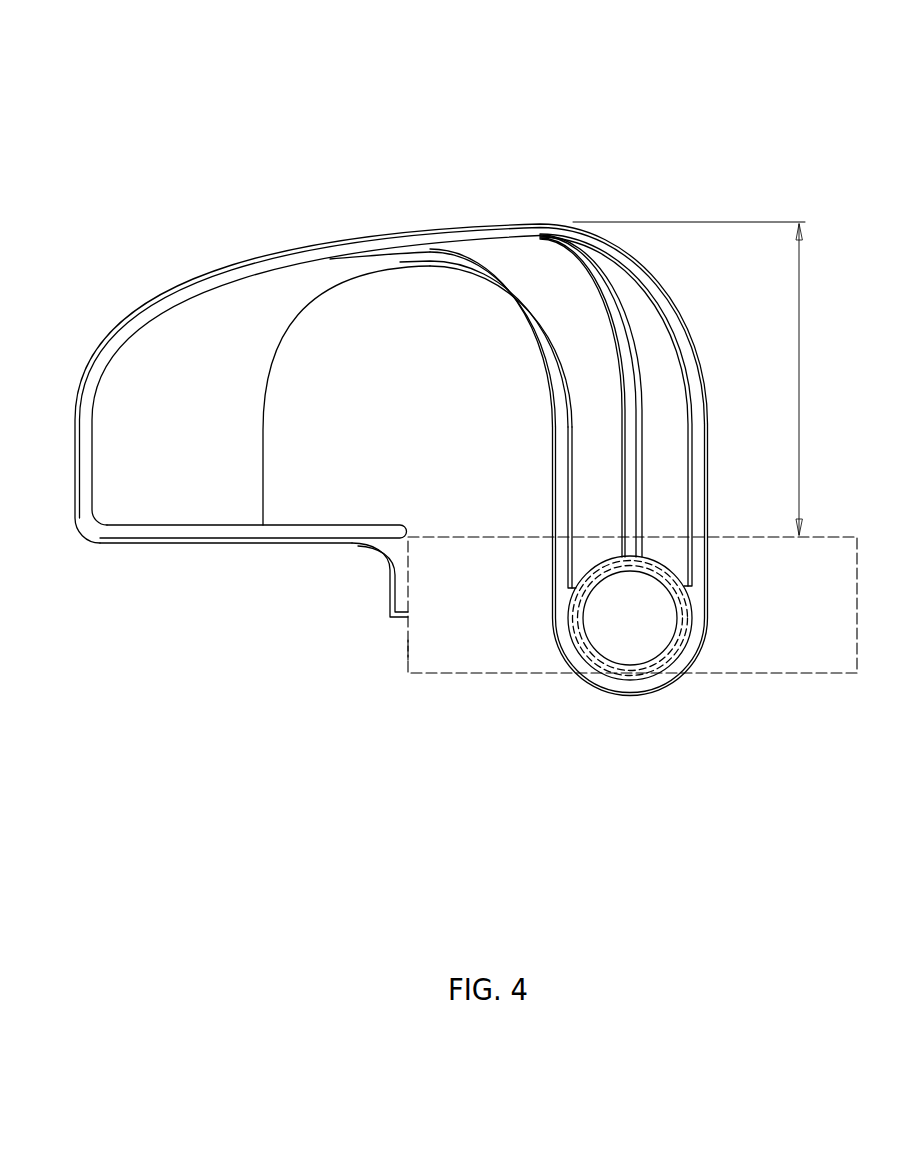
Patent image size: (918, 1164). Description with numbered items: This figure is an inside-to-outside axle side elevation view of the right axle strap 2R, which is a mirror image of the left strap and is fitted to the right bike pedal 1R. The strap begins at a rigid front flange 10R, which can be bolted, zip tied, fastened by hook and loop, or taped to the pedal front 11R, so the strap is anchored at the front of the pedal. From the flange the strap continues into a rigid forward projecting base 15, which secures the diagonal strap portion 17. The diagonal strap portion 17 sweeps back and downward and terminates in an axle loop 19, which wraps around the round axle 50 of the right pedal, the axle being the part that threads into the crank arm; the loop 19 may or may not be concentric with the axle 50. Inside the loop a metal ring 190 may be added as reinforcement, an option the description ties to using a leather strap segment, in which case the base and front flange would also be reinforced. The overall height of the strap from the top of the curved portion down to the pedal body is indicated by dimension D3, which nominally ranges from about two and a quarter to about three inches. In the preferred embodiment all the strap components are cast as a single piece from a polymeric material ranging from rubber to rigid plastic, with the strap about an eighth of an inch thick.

The right axle strap 2R is at (508, 262).
The right bike pedal 1R is at (778, 621).
The front flange 10R is at (402, 585).
The pedal front 11R is at (408, 648).
The forward projecting base 15 is at (296, 525).
The diagonal strap portion 17 is at (192, 398).
The axle loop 19 is at (657, 693).
The axle 50 is at (608, 657).
The metal ring 190 is at (580, 637).
The dimension D3 is at (694, 378).